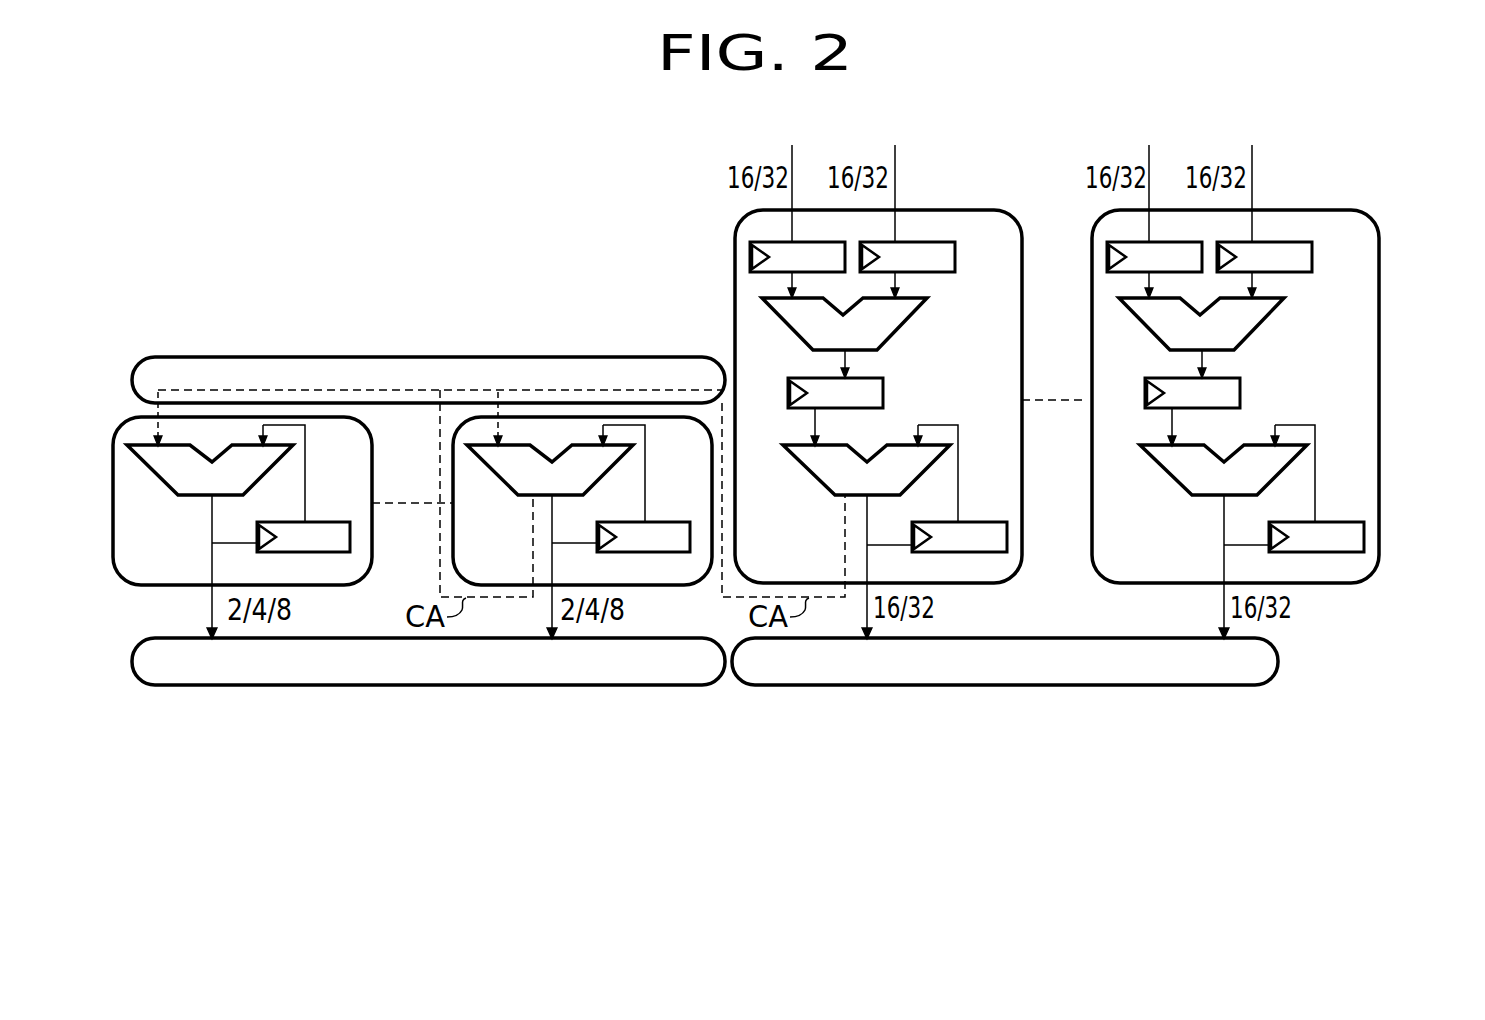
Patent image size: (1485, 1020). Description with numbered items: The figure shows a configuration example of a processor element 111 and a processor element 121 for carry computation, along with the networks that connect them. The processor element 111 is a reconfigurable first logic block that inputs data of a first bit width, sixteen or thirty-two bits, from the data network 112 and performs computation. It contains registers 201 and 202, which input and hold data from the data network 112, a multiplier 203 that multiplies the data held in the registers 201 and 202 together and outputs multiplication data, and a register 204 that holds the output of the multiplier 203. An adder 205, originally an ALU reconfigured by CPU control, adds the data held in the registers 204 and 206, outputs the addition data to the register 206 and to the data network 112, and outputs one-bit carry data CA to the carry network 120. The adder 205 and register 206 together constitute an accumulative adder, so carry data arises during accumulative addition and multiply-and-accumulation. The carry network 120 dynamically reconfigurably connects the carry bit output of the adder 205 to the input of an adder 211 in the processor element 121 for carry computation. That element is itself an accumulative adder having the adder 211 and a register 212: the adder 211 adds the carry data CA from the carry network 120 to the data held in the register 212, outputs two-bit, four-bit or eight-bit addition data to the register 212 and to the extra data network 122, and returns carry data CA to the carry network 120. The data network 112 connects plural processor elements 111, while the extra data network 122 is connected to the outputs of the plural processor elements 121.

The processor element 111 is at (735, 297).
The data network 112 is at (1027, 686).
The carry network 120 is at (297, 357).
The processor element for carry computation 121 is at (157, 586).
The extra data network 122 is at (430, 686).
The register 201 is at (746, 254).
The register 202 is at (936, 272).
The multiplier 203 is at (905, 325).
The register 204 is at (885, 386).
The adder 205 is at (815, 478).
The register 206 is at (983, 519).
The adder 211 is at (160, 478).
The register 212 is at (319, 519).